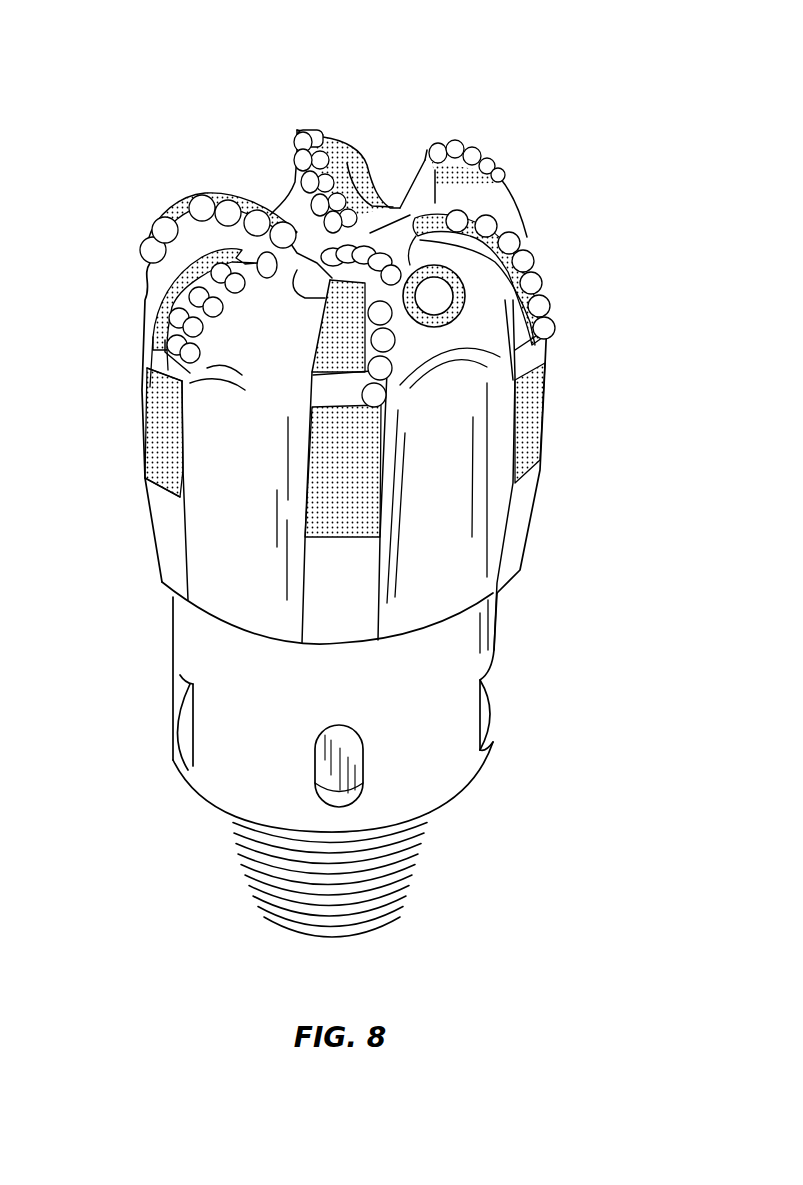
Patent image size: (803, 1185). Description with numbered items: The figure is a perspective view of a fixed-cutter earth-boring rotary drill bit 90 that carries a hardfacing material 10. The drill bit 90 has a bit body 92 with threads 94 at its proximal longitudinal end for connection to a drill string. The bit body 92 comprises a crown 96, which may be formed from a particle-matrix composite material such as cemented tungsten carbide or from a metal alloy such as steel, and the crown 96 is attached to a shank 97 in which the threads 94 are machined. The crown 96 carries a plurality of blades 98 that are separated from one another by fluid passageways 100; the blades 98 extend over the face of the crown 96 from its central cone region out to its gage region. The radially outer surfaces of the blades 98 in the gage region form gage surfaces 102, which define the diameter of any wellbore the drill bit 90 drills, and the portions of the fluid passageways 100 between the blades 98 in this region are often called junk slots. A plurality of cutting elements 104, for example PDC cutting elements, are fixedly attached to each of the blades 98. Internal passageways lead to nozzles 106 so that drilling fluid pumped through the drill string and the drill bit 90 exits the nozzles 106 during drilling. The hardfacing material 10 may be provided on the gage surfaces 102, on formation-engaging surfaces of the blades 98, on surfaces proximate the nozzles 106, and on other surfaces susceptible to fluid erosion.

The fixed-cutter drill bit 90 is at (170, 85).
The bit body 92 is at (148, 543).
The threads 94 is at (232, 859).
The crown 96 is at (453, 407).
The shank 97 is at (448, 668).
The blades 98 is at (214, 188).
The fluid passageways 100 is at (250, 357).
The gage surfaces 102 is at (138, 443).
The cutting elements 104 is at (303, 126).
The nozzles 106 is at (435, 296).
The hardfacing material 10 is at (320, 130).